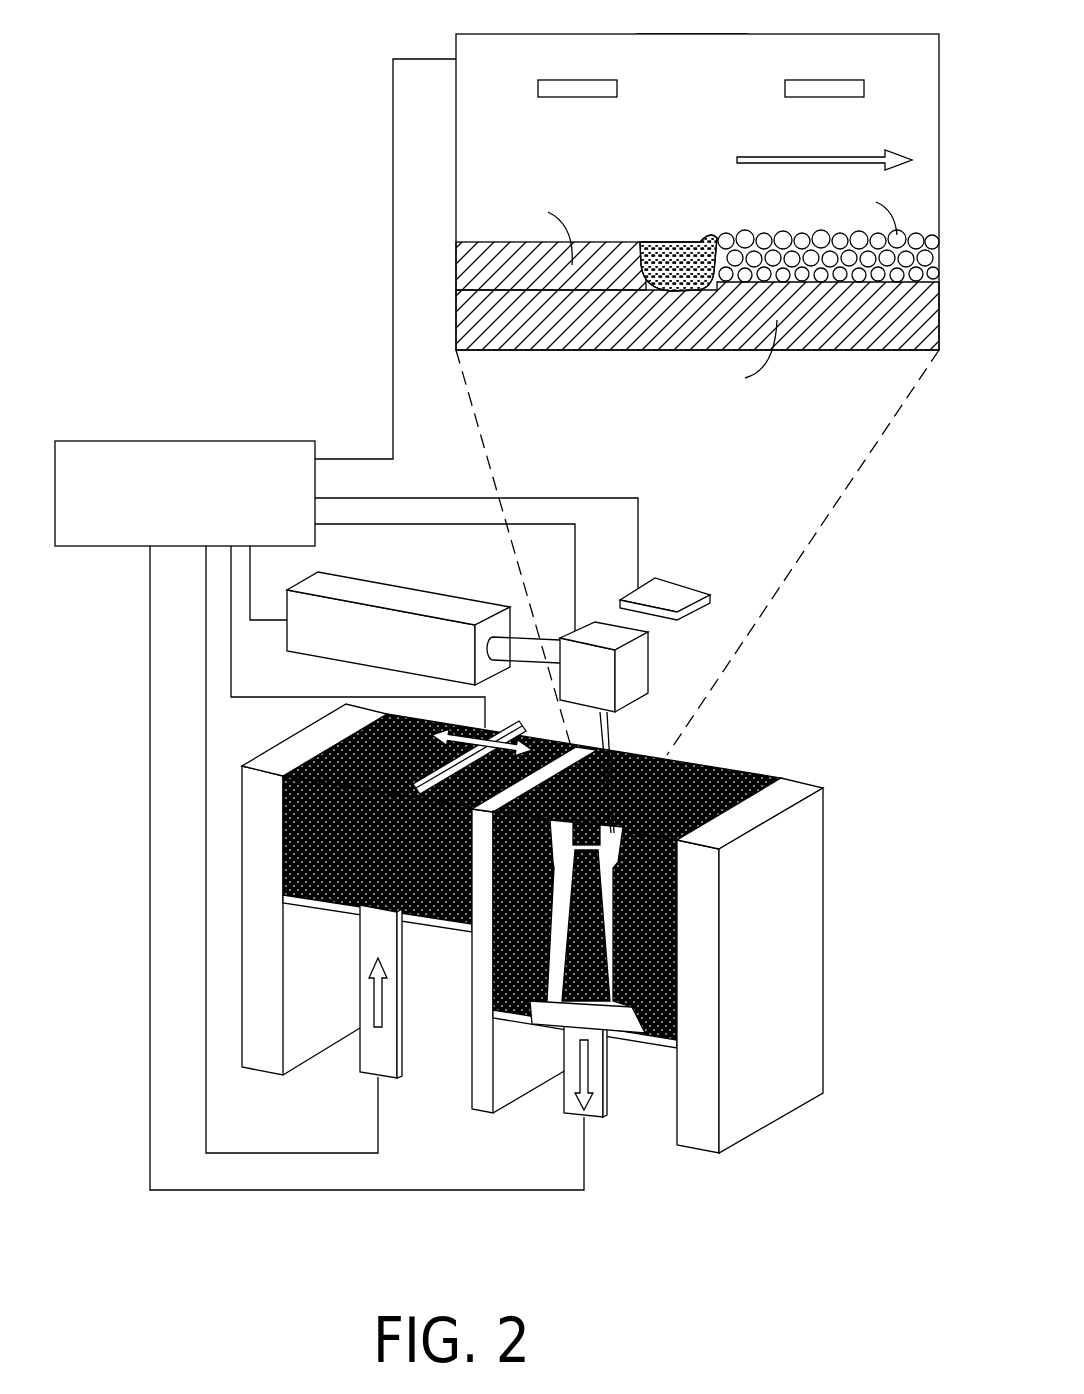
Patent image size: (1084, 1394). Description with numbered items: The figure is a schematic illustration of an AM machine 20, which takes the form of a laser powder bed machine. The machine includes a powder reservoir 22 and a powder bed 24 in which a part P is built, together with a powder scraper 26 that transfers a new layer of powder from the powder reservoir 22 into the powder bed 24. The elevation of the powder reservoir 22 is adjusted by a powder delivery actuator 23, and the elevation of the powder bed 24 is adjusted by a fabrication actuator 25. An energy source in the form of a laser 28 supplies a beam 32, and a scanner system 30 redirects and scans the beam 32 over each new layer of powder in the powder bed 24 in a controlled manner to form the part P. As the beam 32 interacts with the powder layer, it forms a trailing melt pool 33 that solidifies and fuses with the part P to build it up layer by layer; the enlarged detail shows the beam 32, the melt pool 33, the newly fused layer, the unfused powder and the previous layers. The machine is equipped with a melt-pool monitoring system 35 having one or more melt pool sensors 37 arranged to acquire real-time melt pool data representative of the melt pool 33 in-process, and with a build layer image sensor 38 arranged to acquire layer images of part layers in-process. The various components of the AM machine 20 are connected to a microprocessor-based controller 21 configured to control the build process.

The AM machine 20 is at (497, 596).
The microprocessor-based controller 21 is at (189, 525).
The powder reservoir 22 is at (327, 748).
The powder delivery actuator 23 is at (393, 1010).
The powder bed 24 is at (723, 766).
The fabrication actuator 25 is at (596, 1070).
The powder scraper 26 is at (510, 722).
The laser 28 is at (388, 645).
The scanner system 30 is at (604, 683).
The beam 32 is at (615, 738).
The melt pool 33 is at (660, 260).
The melt-pool monitoring system 35 is at (608, 57).
The melt pool sensors 37 is at (550, 97).
The build layer image sensor 38 is at (667, 592).
The part P is at (558, 1009).